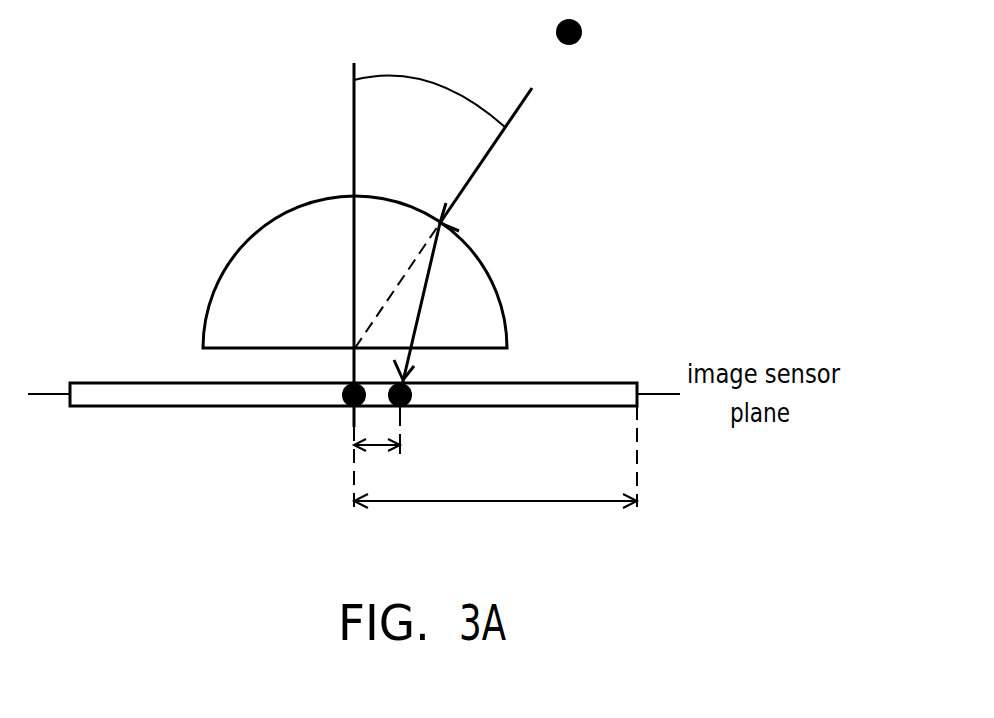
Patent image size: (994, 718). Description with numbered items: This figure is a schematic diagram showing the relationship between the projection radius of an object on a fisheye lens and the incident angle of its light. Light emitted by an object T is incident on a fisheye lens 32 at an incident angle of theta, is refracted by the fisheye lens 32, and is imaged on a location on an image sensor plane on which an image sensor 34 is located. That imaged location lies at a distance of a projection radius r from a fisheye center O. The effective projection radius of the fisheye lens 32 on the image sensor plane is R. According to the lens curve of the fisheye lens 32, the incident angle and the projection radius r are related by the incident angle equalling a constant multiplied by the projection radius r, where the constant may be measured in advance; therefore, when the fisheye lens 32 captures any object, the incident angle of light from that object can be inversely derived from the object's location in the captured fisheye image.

The fisheye lens 32 is at (485, 267).
The image sensor 34 is at (568, 383).
The object T is at (584, 32).
The fisheye center O is at (343, 410).
The projection radius r is at (383, 433).
The effective projection radius R is at (495, 473).